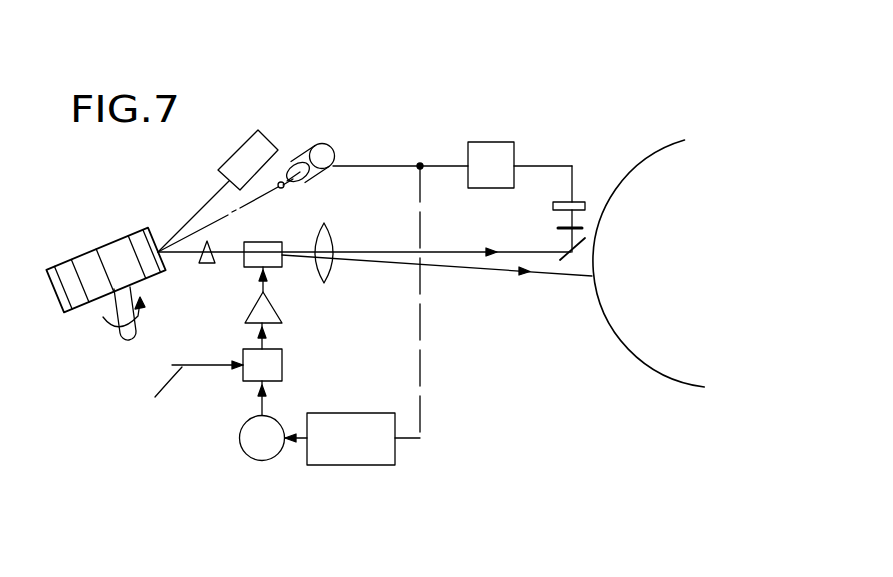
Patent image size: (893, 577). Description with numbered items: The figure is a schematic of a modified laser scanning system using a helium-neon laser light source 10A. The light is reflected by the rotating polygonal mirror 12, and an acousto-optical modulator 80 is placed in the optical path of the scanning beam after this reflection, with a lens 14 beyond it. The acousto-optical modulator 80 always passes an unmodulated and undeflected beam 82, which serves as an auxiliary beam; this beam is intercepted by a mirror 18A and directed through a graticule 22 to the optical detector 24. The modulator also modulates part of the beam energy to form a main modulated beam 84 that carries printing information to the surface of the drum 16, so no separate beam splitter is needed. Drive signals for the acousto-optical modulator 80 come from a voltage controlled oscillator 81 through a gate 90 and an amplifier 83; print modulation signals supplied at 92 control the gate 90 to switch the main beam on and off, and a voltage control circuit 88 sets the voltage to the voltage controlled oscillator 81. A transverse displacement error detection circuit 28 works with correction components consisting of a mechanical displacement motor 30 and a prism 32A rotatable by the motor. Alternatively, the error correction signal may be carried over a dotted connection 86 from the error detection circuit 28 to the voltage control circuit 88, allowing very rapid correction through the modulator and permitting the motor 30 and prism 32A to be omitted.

The polygonal mirror 12 is at (107, 242).
The photodetector 10A is at (252, 140).
The mechanical displacement motor 30 is at (312, 150).
The transverse displacement error detection circuit 28 is at (491, 146).
The optical detector 24 is at (571, 201).
The graticule 22 is at (562, 226).
The mirror 18A is at (591, 247).
The recording drum 16 is at (636, 362).
The unmodulated and undeflected beam 82 is at (466, 250).
The main modulated beam 84 is at (480, 270).
The prism 32A is at (205, 266).
The acousto-optical modulator 80 is at (268, 241).
The lens 14 is at (330, 232).
The amplifier 83 is at (265, 317).
The gate 90 is at (283, 372).
The print modulation signals input 92 is at (208, 363).
The voltage controlled oscillator 81 is at (262, 461).
The voltage control circuit 88 is at (358, 466).
The dotted connection 86 is at (420, 383).